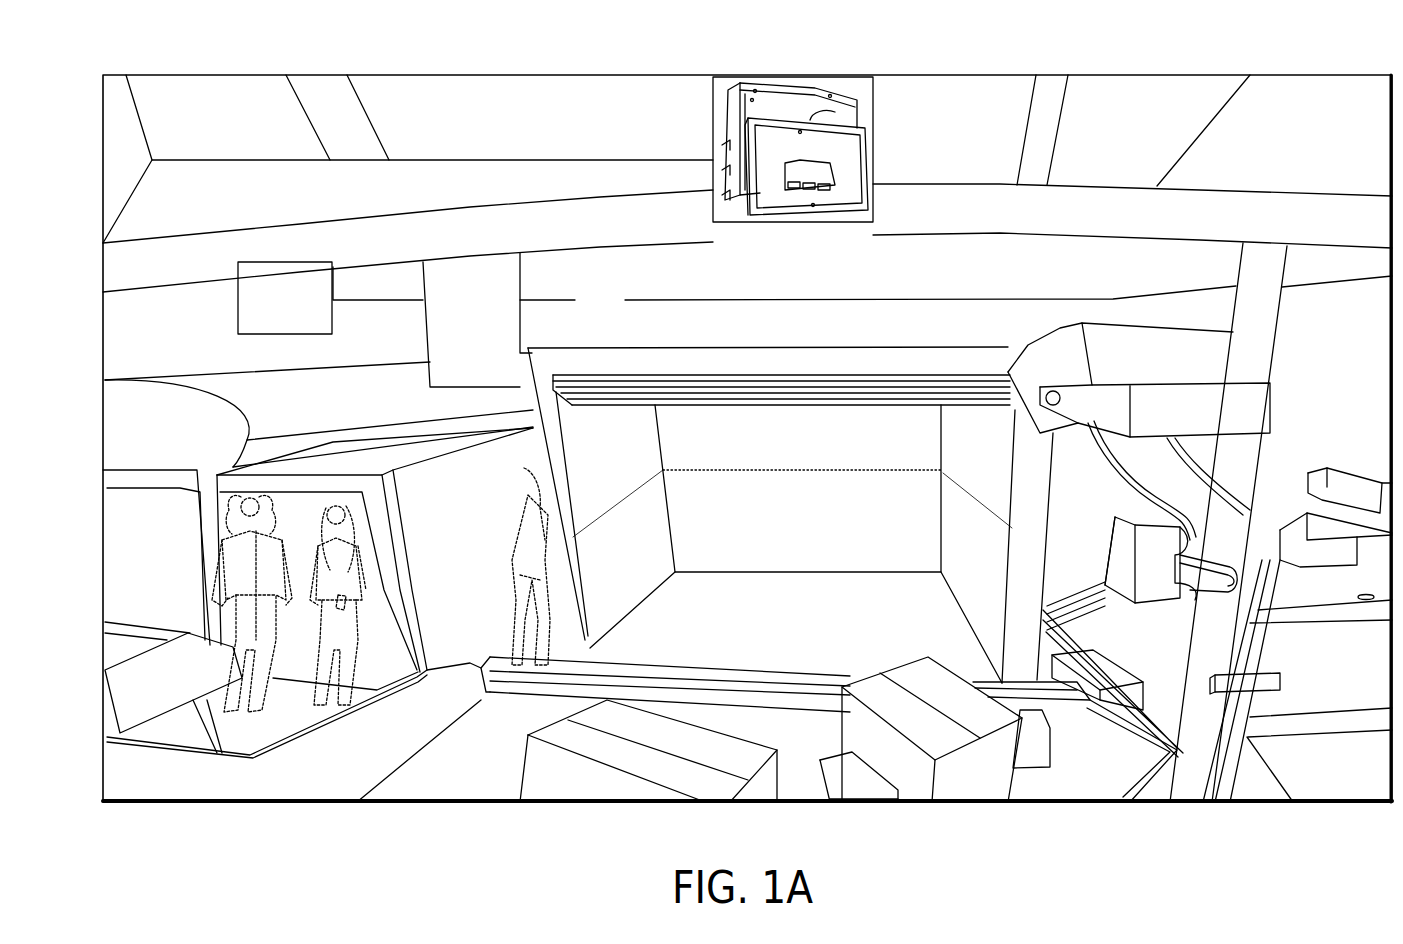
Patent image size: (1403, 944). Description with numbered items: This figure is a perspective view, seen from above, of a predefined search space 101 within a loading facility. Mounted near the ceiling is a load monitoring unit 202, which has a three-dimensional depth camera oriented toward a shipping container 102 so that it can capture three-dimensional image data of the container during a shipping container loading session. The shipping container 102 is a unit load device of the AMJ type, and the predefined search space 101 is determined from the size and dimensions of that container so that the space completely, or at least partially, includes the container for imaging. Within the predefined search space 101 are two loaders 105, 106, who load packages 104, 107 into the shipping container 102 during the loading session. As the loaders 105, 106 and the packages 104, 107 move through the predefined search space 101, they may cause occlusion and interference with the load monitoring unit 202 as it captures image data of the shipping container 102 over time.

The predefined search space 101 is at (119, 55).
The shipping container 102 is at (600, 357).
The package 104 is at (527, 745).
The loader 105 is at (222, 540).
The loader 106 is at (365, 552).
The package 107 is at (917, 657).
The load monitoring unit 202 is at (800, 97).